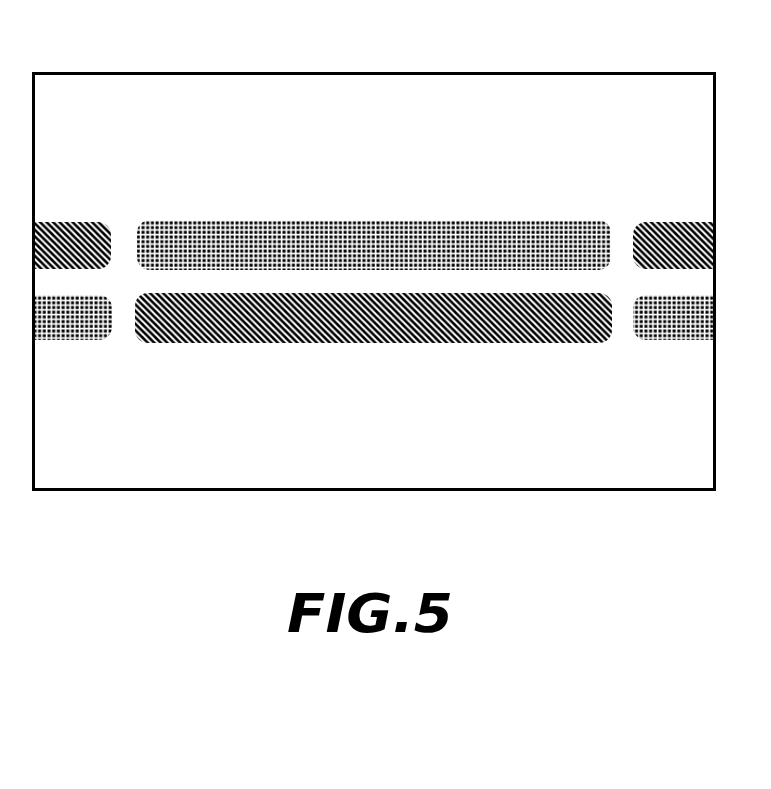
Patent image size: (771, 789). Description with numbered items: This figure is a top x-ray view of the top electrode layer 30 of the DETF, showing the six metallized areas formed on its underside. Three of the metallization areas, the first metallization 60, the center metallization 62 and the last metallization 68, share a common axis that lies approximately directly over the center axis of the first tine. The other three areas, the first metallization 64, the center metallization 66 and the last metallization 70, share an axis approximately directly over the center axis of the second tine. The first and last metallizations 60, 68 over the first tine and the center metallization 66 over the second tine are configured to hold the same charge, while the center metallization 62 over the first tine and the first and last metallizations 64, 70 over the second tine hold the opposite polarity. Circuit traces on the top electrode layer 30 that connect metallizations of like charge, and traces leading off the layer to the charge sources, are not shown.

The top electrode layer 30 is at (108, 82).
The first metallization 60 is at (677, 237).
The center metallization 62 is at (309, 243).
The first metallization 64 is at (678, 325).
The center metallization 66 is at (308, 320).
The last metallization 68 is at (69, 238).
The last metallization 70 is at (68, 325).